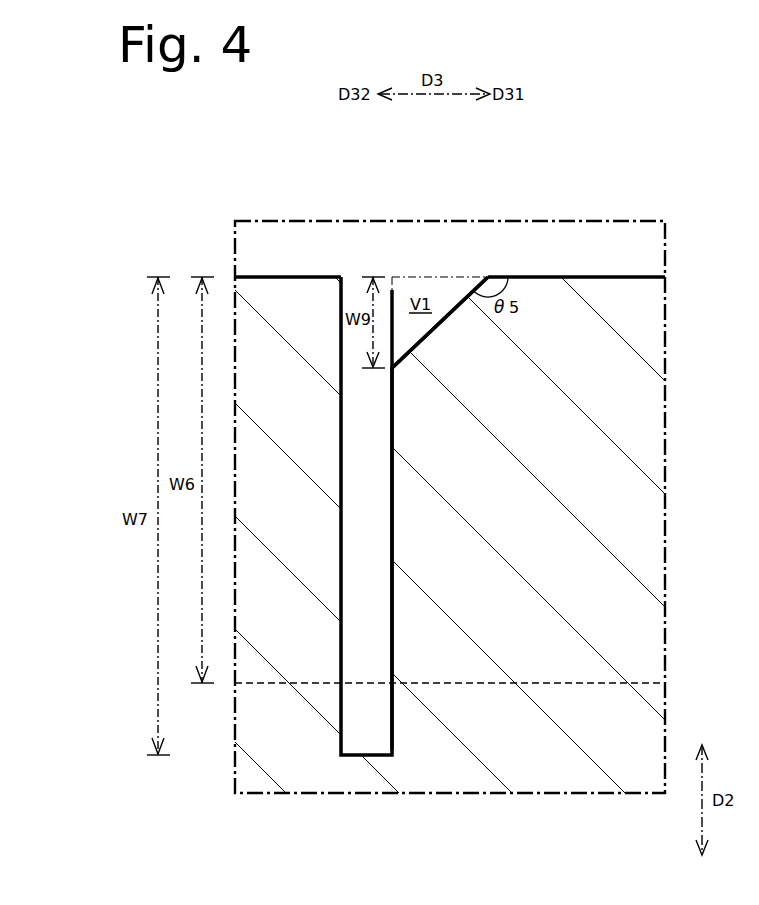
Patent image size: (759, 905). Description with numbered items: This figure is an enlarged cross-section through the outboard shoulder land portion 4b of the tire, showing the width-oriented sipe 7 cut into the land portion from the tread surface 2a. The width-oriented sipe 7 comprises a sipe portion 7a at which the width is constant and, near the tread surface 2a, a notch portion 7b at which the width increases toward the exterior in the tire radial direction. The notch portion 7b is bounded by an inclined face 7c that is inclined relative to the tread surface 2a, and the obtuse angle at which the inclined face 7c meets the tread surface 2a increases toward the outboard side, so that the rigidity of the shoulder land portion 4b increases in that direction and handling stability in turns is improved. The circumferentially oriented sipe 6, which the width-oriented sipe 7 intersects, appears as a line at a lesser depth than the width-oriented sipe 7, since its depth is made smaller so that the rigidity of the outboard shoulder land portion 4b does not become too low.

The width-oriented sipe 7 is at (385, 263).
The sipe portion 7a is at (393, 603).
The notch portion 7b is at (430, 282).
The inclined face 7c is at (464, 296).
The tread surface 2a is at (601, 276).
The outboard shoulder land portion 4b is at (645, 247).
The circumferentially oriented sipe 6 is at (644, 673).